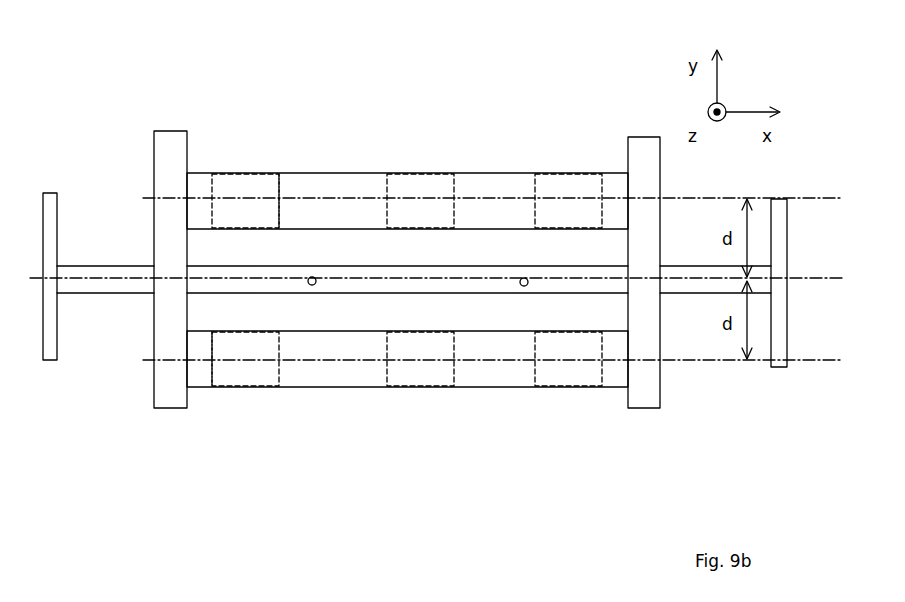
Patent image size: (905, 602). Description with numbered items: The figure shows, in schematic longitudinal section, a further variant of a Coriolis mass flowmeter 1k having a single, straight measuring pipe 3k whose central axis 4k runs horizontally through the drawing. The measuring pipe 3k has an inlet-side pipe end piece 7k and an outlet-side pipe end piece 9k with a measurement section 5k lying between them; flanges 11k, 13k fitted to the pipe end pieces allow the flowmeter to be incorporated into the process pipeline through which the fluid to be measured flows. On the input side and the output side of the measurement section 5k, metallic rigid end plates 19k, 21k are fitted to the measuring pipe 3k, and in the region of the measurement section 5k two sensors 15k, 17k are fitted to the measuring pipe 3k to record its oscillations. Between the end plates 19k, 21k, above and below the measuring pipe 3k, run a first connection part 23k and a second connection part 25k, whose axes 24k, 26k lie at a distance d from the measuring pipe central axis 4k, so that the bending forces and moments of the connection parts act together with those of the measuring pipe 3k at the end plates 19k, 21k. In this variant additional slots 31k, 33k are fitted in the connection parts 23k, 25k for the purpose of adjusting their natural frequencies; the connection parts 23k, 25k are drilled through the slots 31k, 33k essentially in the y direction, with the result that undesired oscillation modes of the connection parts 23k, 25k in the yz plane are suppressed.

The Coriolis mass flowmeter 1k is at (407, 327).
The measuring pipe 3k is at (137, 301).
The measuring pipe central axis 4k is at (444, 294).
The measurement section 5k is at (298, 285).
The inlet-side pipe end piece 7k is at (107, 278).
The outlet-side pipe end piece 9k is at (693, 276).
The flange 11k is at (52, 210).
The flange 13k is at (782, 350).
The sensor 15k is at (314, 278).
The sensor 17k is at (523, 278).
The end plate 19k is at (173, 145).
The end plate 21k is at (642, 150).
The first connection part 23k is at (284, 180).
The axis of connection part 24k is at (830, 198).
The second connection part 25k is at (207, 372).
The axis of connection part 26k is at (500, 377).
The slot 31k is at (555, 388).
The slot 33k is at (233, 197).